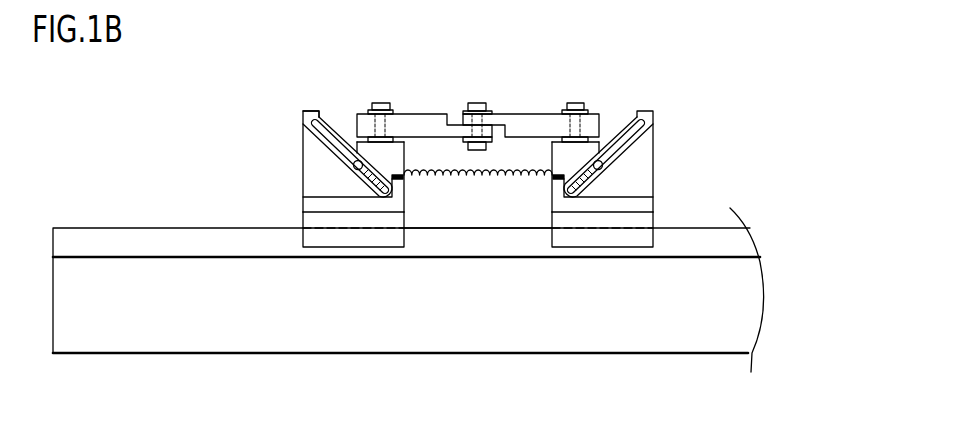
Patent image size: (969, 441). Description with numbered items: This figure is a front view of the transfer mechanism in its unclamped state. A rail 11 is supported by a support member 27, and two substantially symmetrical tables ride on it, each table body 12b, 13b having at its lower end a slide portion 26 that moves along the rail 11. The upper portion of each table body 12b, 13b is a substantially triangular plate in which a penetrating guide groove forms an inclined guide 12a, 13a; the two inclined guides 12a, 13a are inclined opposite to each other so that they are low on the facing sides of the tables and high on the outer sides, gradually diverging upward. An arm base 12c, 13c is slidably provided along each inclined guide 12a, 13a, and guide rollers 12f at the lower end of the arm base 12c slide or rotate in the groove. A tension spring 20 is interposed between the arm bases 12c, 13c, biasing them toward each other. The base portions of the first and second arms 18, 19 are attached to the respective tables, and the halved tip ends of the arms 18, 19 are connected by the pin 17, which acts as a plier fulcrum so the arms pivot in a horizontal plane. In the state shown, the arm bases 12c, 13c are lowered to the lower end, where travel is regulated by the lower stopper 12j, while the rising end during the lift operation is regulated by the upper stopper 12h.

The rail 11 is at (678, 247).
The inclined guide 12a is at (310, 129).
The table body 12b is at (318, 185).
The arm base 12c is at (346, 136).
The guide roller 12f is at (357, 170).
The upper stopper 12h is at (307, 107).
The lower stopper 12j is at (404, 190).
The inclined guide 13a is at (645, 133).
The table body 13b is at (618, 175).
The arm base 13c is at (606, 133).
The pin 17 is at (474, 107).
The first arm 18 is at (425, 123).
The second arm 19 is at (527, 120).
The tension spring 20 is at (516, 174).
The slide portion 26 is at (318, 240).
The support member 27 is at (690, 312).